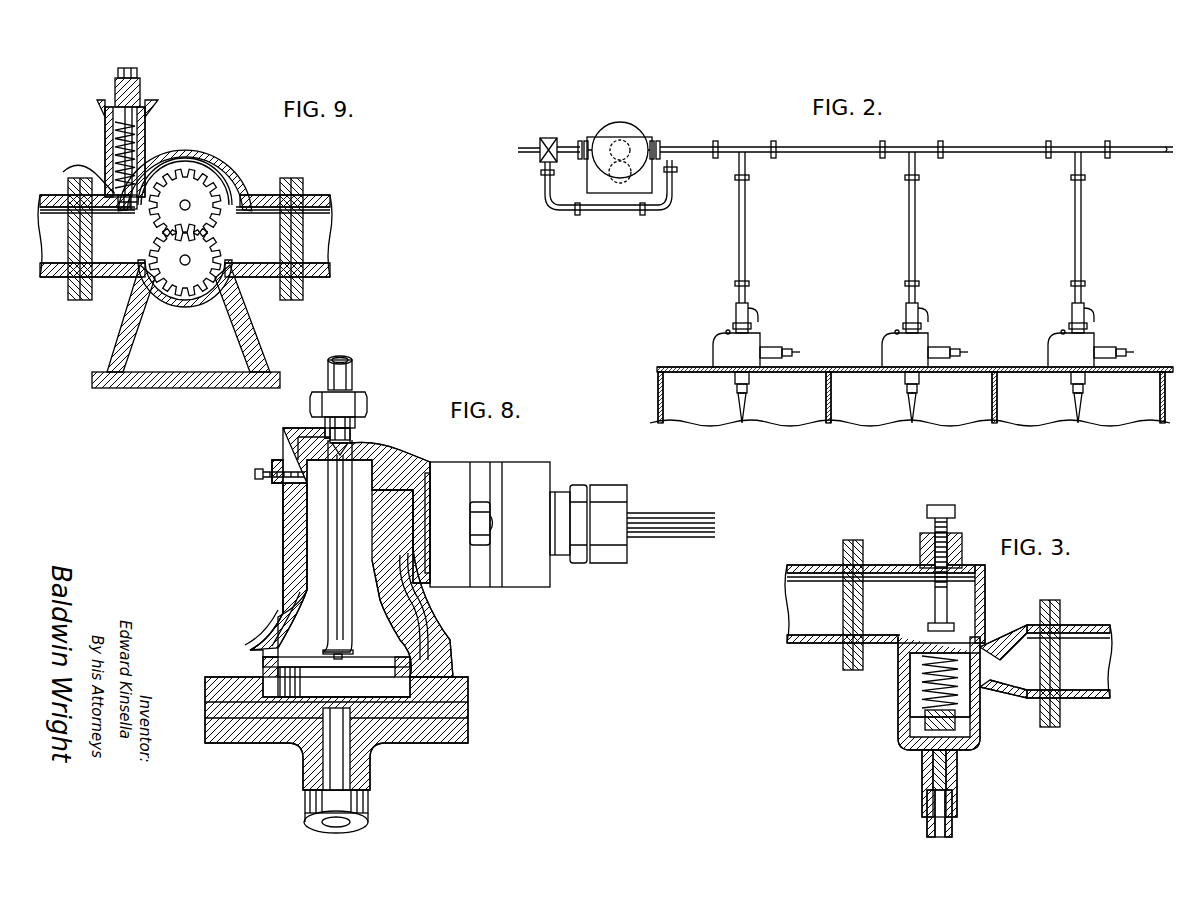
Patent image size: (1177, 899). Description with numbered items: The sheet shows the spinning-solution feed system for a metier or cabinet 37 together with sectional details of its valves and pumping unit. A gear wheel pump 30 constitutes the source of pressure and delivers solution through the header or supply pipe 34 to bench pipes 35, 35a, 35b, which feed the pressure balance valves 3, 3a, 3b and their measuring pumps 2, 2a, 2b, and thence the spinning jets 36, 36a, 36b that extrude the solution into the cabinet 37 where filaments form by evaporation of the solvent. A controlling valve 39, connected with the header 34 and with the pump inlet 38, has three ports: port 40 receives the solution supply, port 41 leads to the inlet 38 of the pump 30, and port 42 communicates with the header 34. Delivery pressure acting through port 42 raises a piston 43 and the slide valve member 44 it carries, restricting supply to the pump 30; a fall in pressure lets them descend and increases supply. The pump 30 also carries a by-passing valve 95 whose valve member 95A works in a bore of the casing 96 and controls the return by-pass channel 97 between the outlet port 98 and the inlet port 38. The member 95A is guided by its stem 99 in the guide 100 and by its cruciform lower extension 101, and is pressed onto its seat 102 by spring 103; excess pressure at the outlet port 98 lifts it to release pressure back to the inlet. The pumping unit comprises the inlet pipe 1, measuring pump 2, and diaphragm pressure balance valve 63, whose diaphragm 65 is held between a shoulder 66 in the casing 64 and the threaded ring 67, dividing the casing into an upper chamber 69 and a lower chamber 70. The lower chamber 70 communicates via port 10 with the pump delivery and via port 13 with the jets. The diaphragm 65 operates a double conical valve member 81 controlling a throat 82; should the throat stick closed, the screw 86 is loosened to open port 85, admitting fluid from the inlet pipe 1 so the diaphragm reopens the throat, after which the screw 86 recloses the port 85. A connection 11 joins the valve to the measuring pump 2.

In FIG. 8, the inlet pipe 1 is at (354, 377).
In FIG. 2, the measuring pump 2 is at (770, 350).
In FIG. 8, the measuring pump 2 is at (495, 476).
In FIG. 2, the pressure balance valve 3 is at (752, 340).
In FIG. 2, the measuring pump 2a is at (938, 350).
In FIG. 2, the pressure balance valve 3a is at (920, 340).
In FIG. 2, the measuring pump 2b is at (1104, 350).
In FIG. 2, the pressure balance valve 3b is at (1086, 340).
In FIG. 8, the port 10 is at (425, 640).
In FIG. 8, the connection 11 is at (430, 470).
In FIG. 8, the port 13 is at (335, 775).
In FIG. 9, the gear wheel pump 30 is at (212, 245).
In FIG. 2, the gear wheel pump 30 is at (626, 140).
In FIG. 2, the header or supply pipe 34 is at (728, 149).
In FIG. 2, the bench pipe 35 is at (745, 232).
In FIG. 2, the bench pipe 35a is at (915, 229).
In FIG. 2, the bench pipe 35b is at (1081, 224).
In FIG. 2, the spinning jet 36 is at (734, 380).
In FIG. 2, the spinning jet 36a is at (904, 380).
In FIG. 2, the spinning jet 36b is at (1070, 380).
In FIG. 2, the spinning metier or cabinet 37 is at (800, 402).
In FIG. 9, the inlet 38 is at (266, 215).
In FIG. 2, the inlet 38 is at (582, 140).
In FIG. 2, the controlling valve 39 is at (538, 152).
In FIG. 2, the port 40 is at (533, 146).
In FIG. 3, the port 40 is at (897, 595).
In FIG. 9, the port 41 is at (312, 229).
In FIG. 2, the port 41 is at (565, 146).
In FIG. 3, the port 41 is at (1075, 650).
In FIG. 2, the port 42 is at (542, 170).
In FIG. 3, the port 42 is at (945, 821).
In FIG. 3, the piston 43 is at (950, 769).
In FIG. 3, the slide valve member 44 is at (975, 721).
In FIG. 8, the diaphragm pressure balance valve 63 is at (403, 452).
In FIG. 8, the casing 64 is at (287, 530).
In FIG. 8, the diaphragm 65 is at (297, 642).
In FIG. 8, the shoulder 66 is at (262, 643).
In FIG. 8, the threaded ring 67 is at (264, 660).
In FIG. 8, the upper chamber 69 is at (322, 566).
In FIG. 8, the lower chamber 70 is at (300, 690).
In FIG. 8, the double conical valve member 81 is at (345, 449).
In FIG. 8, the throat 82 is at (352, 432).
In FIG. 8, the port 85 is at (283, 445).
In FIG. 8, the screw 86 is at (261, 480).
In FIG. 9, the by-passing valve 95 is at (114, 158).
In FIG. 9, the valve member 95A is at (72, 173).
In FIG. 9, the casing 96 is at (162, 138).
In FIG. 9, the return by-pass port or channel 97 is at (222, 158).
In FIG. 9, the outlet port 98 is at (62, 268).
In FIG. 9, the stem 99 is at (105, 120).
In FIG. 9, the guide 100 is at (142, 86).
In FIG. 9, the cruciform lower extension 101 is at (150, 212).
In FIG. 9, the seat 102 is at (122, 210).
In FIG. 9, the spring 103 is at (150, 111).